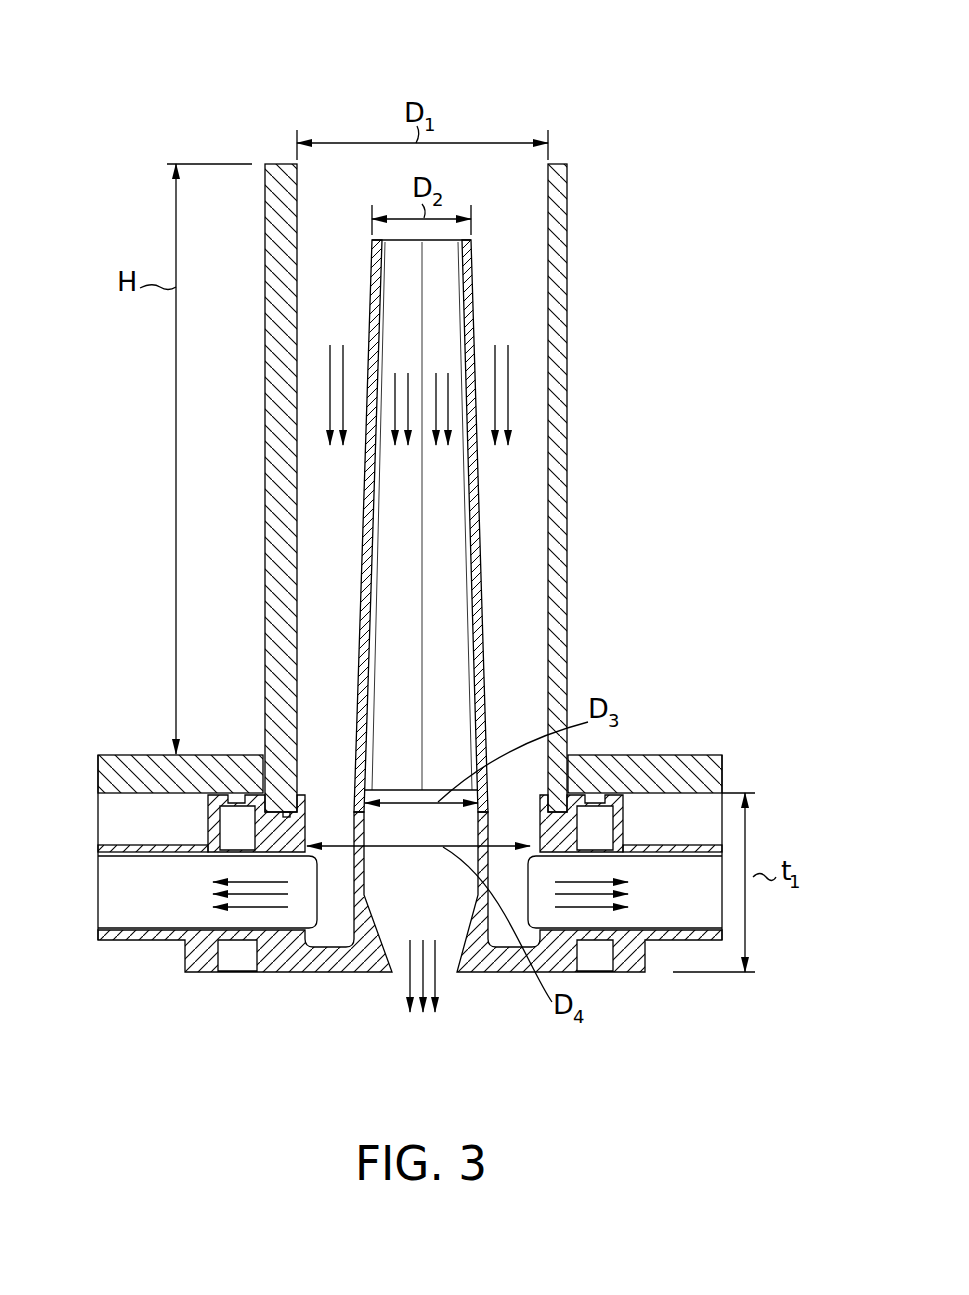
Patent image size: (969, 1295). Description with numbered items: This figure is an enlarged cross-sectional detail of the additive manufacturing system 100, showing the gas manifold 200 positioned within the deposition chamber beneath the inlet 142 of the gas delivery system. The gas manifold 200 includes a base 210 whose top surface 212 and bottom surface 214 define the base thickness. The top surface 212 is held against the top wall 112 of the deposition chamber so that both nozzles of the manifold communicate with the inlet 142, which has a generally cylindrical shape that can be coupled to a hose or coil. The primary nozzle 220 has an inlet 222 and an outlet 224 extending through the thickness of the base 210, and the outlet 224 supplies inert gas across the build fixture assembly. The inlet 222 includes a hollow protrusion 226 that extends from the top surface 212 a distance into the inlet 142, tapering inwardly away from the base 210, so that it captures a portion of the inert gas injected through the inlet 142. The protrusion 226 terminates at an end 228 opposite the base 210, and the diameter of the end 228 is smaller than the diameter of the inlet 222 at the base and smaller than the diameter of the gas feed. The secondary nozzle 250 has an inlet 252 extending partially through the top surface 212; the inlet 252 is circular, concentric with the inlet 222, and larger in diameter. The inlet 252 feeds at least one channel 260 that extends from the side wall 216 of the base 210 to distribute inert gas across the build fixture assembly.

The additive manufacturing system 100 is at (148, 90).
The top wall 112 is at (633, 753).
The inlet 142 is at (567, 303).
The gas manifold 200 is at (647, 955).
The base 210 is at (332, 960).
The top surface 212 is at (313, 783).
The bottom surface 214 is at (472, 977).
The side wall 216 is at (208, 812).
The primary nozzle 220 is at (447, 908).
The inlet 222 is at (430, 790).
The outlet 224 is at (392, 973).
The hollow protrusion 226 is at (483, 537).
The end 228 is at (471, 240).
The secondary nozzle 250 is at (533, 835).
The inlet 252 is at (343, 793).
The channel 260 is at (162, 908).